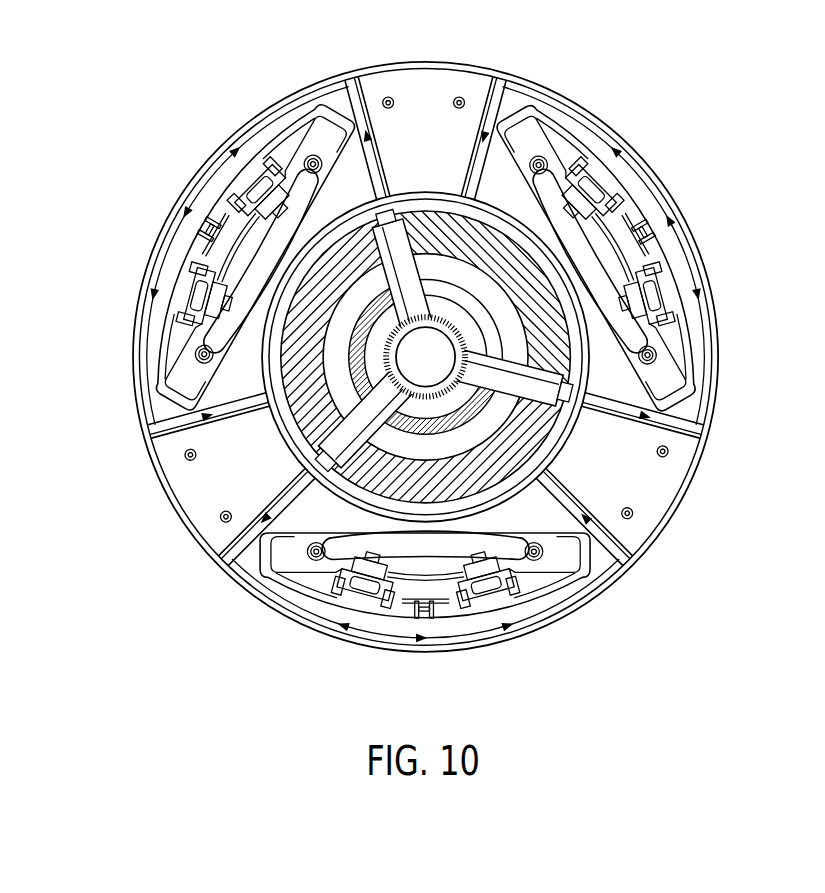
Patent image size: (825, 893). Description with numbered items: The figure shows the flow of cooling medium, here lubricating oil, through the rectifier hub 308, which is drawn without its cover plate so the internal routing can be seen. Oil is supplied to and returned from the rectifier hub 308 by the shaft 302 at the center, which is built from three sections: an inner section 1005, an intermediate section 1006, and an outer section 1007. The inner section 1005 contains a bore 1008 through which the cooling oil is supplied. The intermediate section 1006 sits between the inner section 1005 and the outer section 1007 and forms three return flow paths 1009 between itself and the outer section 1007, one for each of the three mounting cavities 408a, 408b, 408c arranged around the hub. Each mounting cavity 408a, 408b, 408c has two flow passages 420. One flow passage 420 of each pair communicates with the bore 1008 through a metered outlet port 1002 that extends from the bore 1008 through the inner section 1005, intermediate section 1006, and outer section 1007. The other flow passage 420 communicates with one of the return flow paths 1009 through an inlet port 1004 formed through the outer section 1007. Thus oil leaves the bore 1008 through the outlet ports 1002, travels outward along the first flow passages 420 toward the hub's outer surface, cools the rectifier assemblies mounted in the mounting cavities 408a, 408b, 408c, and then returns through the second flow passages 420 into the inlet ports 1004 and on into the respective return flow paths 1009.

The rectifier hub 308 is at (447, 357).
The shaft 302 is at (577, 290).
The mounting cavity 408a is at (648, 328).
The mounting cavity 408b is at (512, 572).
The mounting cavity 408c is at (197, 322).
The flow passage 420 is at (356, 73).
The outlet port 1002 is at (418, 207).
The inlet port 1004 is at (514, 92).
The inner section 1005 is at (465, 478).
The intermediate section 1006 is at (322, 310).
The outer section 1007 is at (355, 312).
The bore 1008 is at (403, 370).
The return flow path 1009 is at (507, 293).